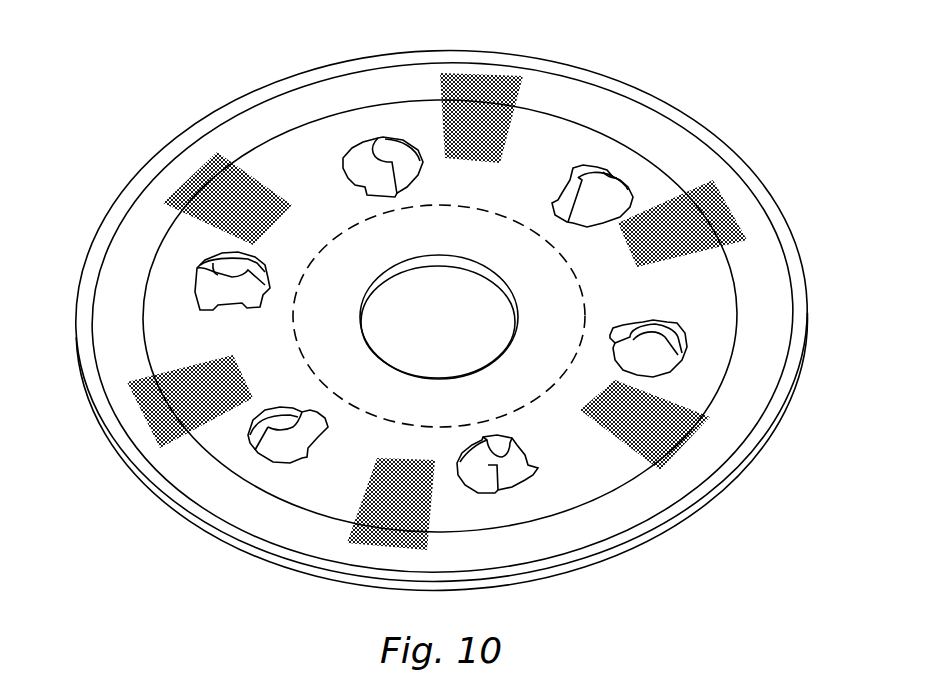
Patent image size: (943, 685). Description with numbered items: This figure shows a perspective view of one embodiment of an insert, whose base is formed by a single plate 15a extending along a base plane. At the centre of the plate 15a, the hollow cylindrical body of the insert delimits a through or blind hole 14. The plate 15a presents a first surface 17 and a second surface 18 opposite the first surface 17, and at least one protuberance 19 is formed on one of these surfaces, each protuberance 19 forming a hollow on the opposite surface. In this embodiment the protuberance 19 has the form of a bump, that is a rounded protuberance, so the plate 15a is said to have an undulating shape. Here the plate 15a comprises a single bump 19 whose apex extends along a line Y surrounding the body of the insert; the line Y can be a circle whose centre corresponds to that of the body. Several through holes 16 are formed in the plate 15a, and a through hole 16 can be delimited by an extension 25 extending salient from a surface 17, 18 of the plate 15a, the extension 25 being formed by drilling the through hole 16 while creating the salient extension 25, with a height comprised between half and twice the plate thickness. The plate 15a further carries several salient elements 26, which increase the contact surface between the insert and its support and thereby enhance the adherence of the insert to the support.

The hole 14 is at (458, 297).
The plate 15a is at (744, 97).
The through hole 16 is at (402, 162).
The first surface 17 is at (252, 560).
The second surface 18 is at (217, 507).
The protuberance 19 is at (603, 505).
The extension 25 is at (208, 288).
The salient elements 26 is at (217, 190).
The line Y is at (585, 293).